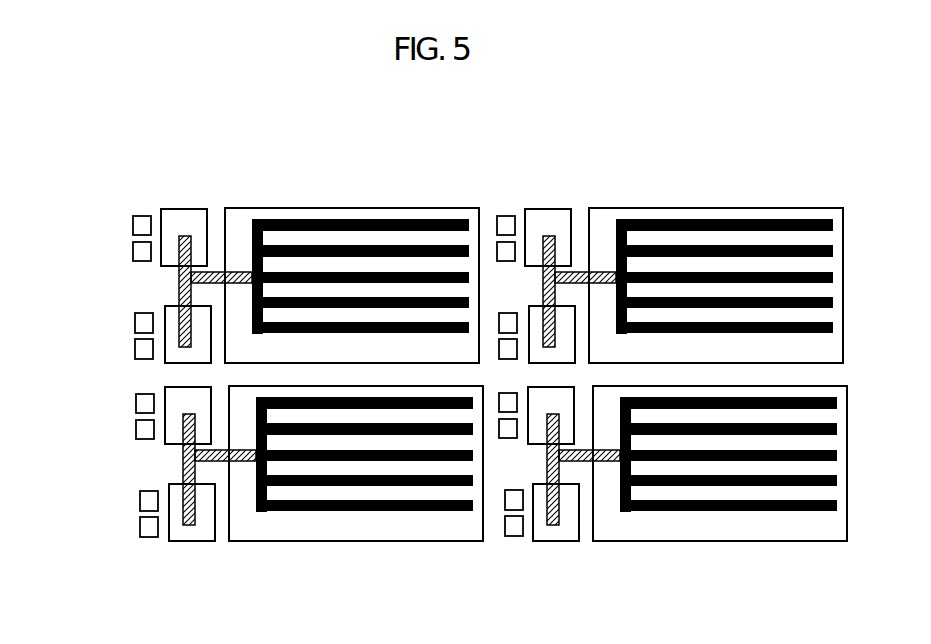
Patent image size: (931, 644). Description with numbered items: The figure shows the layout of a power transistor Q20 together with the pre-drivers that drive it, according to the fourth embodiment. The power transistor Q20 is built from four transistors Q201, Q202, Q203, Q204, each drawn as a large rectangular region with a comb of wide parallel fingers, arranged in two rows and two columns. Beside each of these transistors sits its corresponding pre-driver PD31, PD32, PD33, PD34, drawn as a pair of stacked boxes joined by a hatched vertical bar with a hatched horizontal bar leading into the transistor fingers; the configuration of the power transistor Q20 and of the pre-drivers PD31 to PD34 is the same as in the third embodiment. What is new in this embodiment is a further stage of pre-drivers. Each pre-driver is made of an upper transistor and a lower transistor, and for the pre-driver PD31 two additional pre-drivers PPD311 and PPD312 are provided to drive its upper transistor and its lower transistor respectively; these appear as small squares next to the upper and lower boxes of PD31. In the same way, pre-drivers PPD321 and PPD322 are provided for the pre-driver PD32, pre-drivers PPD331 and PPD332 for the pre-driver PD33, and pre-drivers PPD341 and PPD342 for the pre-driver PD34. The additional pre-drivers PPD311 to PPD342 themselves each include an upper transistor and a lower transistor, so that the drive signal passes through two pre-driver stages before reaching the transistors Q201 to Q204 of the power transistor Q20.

The power transistor Q20 is at (678, 162).
The transistor Q201 is at (400, 208).
The transistor Q202 is at (795, 208).
The transistor Q203 is at (416, 542).
The transistor Q204 is at (793, 540).
The pre-driver PD31 is at (190, 205).
The pre-driver PD32 is at (570, 205).
The pre-driver PD33 is at (187, 547).
The pre-driver PD34 is at (582, 545).
The pre-driver PPD311 is at (137, 208).
The pre-driver PPD312 is at (135, 312).
The pre-driver PPD321 is at (505, 207).
The pre-driver PPD322 is at (498, 358).
The pre-driver PPD331 is at (140, 450).
The pre-driver PPD332 is at (143, 545).
The pre-driver PPD341 is at (513, 388).
The pre-driver PPD342 is at (542, 568).